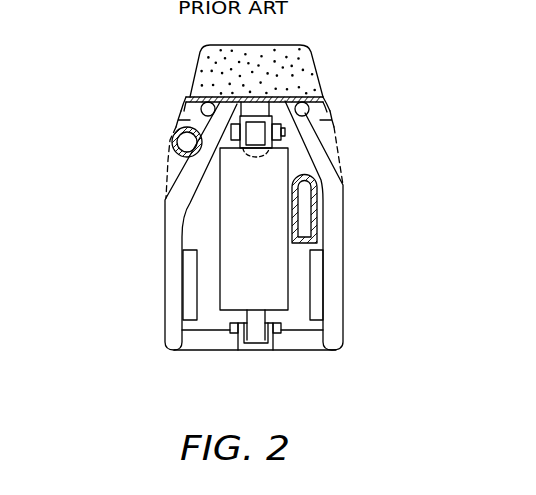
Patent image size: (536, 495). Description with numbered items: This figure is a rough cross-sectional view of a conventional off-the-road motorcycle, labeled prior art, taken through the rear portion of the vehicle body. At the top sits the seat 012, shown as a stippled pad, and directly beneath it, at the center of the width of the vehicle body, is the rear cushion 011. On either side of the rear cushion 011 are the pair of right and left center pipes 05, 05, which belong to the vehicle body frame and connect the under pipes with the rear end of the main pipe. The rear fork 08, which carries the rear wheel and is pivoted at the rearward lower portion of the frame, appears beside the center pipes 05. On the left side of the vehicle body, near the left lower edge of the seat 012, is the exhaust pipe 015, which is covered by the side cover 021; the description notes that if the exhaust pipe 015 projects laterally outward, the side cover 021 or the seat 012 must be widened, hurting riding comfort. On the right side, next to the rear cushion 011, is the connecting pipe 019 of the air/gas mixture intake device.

The seat 012 is at (297, 48).
The side cover 021 is at (190, 121).
The exhaust pipe 015 is at (176, 154).
The rear cushion 011 is at (275, 168).
The connecting pipe 019 is at (318, 202).
The center pipes 05 is at (173, 241).
The rear fork 08 is at (188, 298).